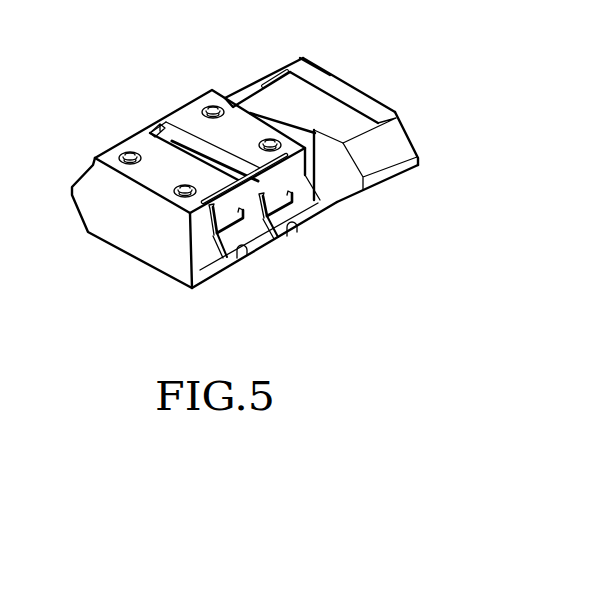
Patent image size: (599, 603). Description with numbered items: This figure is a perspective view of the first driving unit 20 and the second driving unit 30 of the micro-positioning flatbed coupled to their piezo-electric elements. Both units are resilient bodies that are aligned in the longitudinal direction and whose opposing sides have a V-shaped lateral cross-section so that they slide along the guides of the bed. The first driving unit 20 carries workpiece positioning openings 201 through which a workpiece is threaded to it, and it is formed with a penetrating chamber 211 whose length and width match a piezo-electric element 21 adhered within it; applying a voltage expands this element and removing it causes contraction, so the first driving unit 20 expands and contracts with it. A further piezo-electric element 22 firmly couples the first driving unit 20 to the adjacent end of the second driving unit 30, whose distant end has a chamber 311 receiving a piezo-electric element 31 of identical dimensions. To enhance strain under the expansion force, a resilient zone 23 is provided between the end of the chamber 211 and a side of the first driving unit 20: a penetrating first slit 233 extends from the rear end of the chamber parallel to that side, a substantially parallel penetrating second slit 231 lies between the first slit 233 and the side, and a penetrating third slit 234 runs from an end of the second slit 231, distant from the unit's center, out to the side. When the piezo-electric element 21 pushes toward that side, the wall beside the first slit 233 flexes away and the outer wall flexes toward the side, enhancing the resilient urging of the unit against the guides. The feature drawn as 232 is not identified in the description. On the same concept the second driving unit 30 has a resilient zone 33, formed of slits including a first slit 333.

The first driving unit 20 is at (142, 256).
The workpiece positioning openings 201 is at (129, 153).
The piezo-electric element 21 is at (173, 141).
The penetrating chamber 211 is at (156, 128).
The piezo-electric element 22 is at (223, 95).
The resilient zone 23 is at (251, 266).
The second slit 231 is at (213, 224).
The hook foot 232 is at (264, 264).
The first slit 233 is at (287, 157).
The third slit 234 is at (214, 249).
The second driving unit 30 is at (314, 120).
The piezo-electric element 31 is at (347, 56).
The chamber 311 is at (313, 63).
The resilient zone 33 is at (257, 54).
The first slit 333 is at (266, 85).